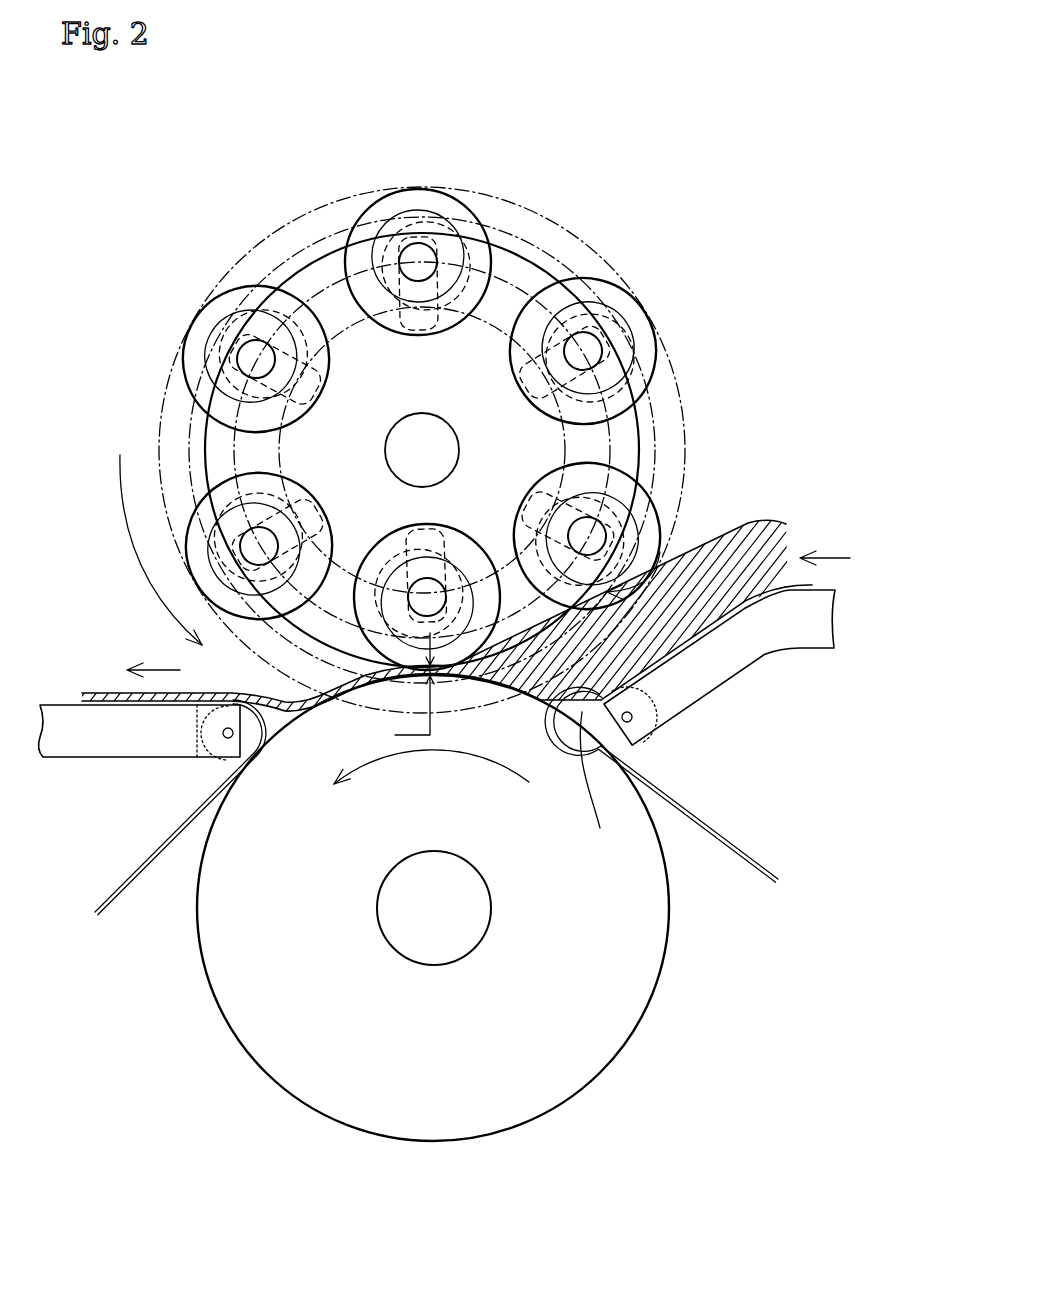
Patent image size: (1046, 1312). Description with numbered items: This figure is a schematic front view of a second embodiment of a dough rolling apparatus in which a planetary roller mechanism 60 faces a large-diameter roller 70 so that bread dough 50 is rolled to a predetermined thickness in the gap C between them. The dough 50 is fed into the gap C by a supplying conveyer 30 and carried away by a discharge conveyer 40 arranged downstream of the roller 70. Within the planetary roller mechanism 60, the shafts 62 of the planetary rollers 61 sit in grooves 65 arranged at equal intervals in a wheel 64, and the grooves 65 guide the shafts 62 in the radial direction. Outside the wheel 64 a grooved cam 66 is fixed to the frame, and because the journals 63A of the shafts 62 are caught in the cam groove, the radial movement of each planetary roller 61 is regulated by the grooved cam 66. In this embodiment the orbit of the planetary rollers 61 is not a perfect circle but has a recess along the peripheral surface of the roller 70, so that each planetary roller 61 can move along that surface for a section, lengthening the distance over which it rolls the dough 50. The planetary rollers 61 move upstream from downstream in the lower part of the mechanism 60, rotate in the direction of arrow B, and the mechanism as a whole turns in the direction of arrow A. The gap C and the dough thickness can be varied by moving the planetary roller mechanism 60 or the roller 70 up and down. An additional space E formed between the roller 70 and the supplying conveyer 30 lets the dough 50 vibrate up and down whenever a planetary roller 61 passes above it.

The supplying conveyer 30 is at (692, 658).
The discharge conveyer 40 is at (122, 738).
The bread dough 50 is at (772, 530).
The planetary roller mechanism 60 is at (419, 407).
The planetary roller 61 is at (443, 212).
The shaft 62 is at (253, 348).
The journal 63A is at (227, 347).
The wheel 64 is at (517, 268).
The groove 65 is at (597, 393).
The grooved cam 66 is at (225, 447).
The roller 70 is at (294, 1060).
The rotation direction of roller unit A is at (139, 548).
The arrow B is at (633, 562).
The gap C is at (412, 685).
The space E is at (594, 786).